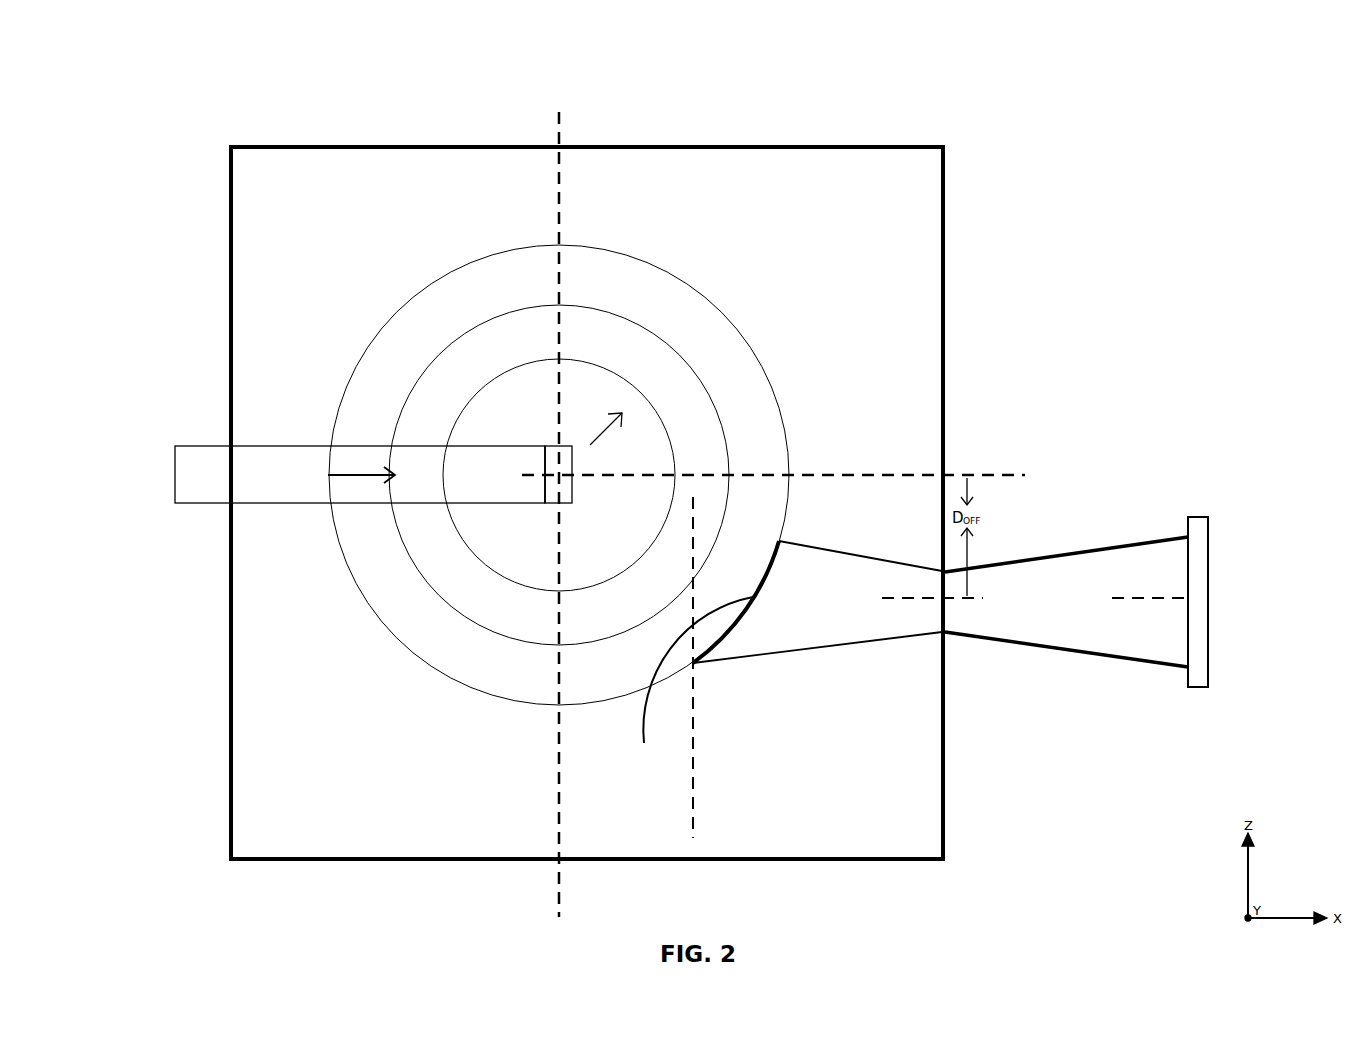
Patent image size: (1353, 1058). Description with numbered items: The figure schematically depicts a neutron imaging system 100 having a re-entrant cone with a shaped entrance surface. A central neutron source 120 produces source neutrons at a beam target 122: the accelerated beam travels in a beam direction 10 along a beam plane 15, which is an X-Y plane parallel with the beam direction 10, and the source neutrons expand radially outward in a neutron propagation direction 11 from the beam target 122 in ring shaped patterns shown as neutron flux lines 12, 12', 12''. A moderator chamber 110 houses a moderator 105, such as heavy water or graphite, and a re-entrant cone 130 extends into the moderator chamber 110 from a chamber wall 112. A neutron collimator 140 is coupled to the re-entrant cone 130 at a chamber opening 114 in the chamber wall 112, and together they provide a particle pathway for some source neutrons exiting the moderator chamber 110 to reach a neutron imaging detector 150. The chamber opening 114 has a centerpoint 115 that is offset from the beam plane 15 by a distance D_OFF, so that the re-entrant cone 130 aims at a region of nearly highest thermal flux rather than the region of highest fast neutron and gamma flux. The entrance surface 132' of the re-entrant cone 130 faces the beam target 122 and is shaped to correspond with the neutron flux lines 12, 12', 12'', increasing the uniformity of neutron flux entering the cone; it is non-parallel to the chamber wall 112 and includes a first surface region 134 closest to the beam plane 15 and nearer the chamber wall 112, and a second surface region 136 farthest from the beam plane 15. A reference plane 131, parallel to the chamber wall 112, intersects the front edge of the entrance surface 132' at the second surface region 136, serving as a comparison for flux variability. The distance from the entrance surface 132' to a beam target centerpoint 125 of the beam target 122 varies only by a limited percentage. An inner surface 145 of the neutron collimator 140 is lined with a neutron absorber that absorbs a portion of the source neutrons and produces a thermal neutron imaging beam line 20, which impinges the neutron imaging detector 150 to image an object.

The beam direction 10 is at (363, 475).
The neutron propagation direction 11 is at (598, 432).
The neutron flux line 12 is at (526, 483).
The neutron flux line 12' is at (559, 421).
The neutron flux line 12'' is at (559, 458).
The beam plane 15 is at (1015, 473).
The thermal neutron imaging beam line 20 is at (1135, 595).
The neutron imaging system 100 is at (1012, 130).
The moderator 105 is at (842, 202).
The moderator chamber 110 is at (967, 228).
The chamber wall 112 is at (943, 297).
The chamber opening 114 is at (945, 604).
The centerpoint 115 is at (910, 597).
The central neutron source 120 is at (175, 503).
The beam target 122 is at (552, 503).
The beam target centerpoint 125 is at (558, 475).
The re-entrant cone 130 is at (798, 652).
The reference plane 131 is at (693, 808).
The entrance surface 132' is at (706, 657).
The first surface region 134 is at (779, 541).
The second surface region 136 is at (693, 663).
The neutron collimator 140 is at (1107, 543).
The inner surface 145 is at (1143, 658).
The neutron imaging detector 150 is at (1208, 598).